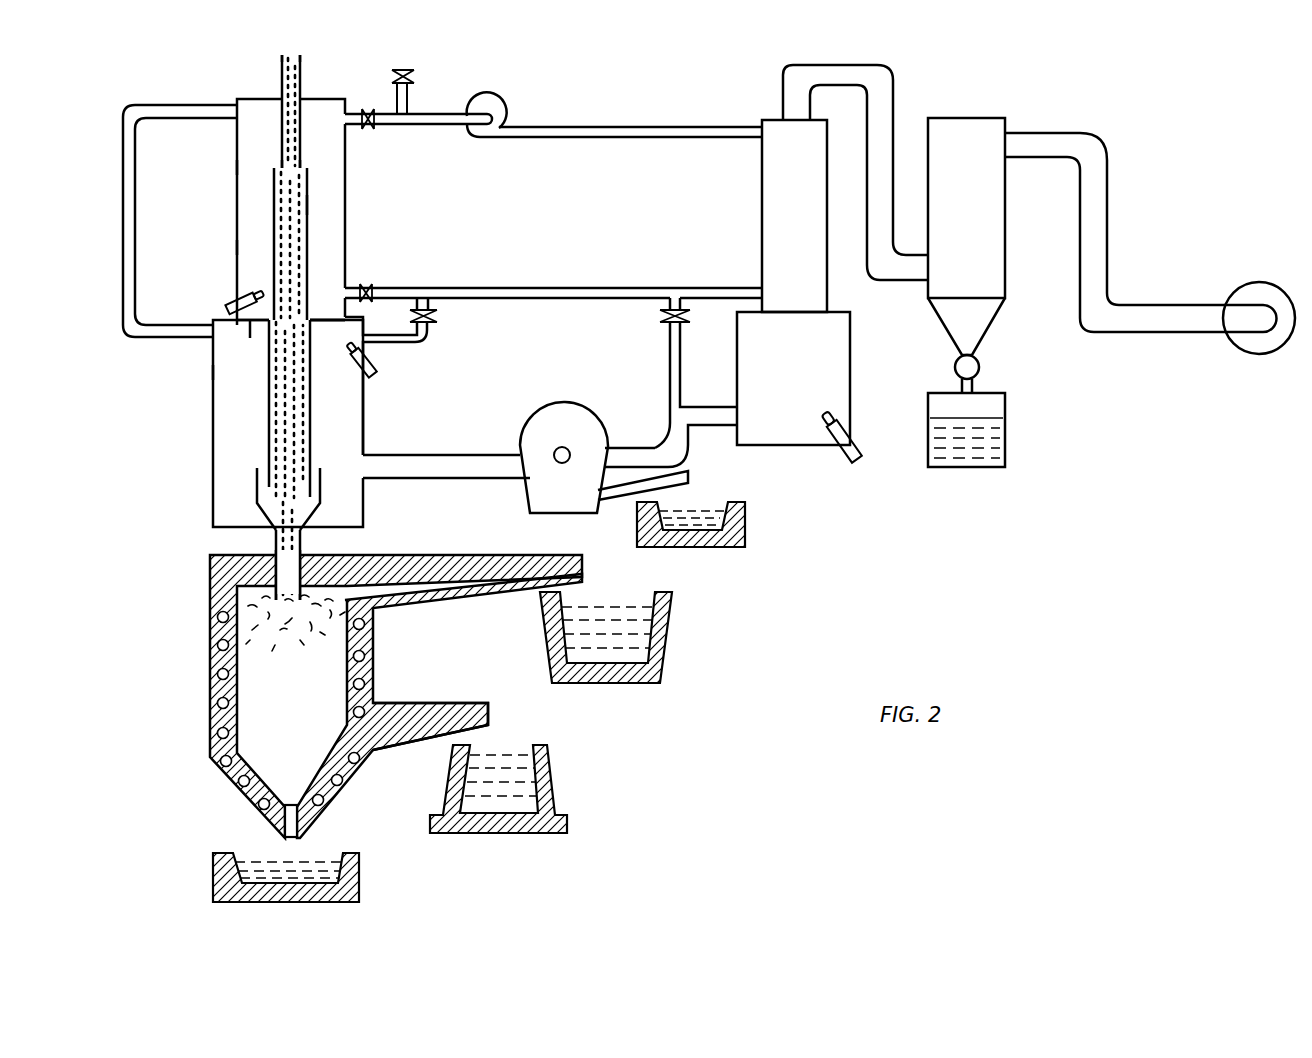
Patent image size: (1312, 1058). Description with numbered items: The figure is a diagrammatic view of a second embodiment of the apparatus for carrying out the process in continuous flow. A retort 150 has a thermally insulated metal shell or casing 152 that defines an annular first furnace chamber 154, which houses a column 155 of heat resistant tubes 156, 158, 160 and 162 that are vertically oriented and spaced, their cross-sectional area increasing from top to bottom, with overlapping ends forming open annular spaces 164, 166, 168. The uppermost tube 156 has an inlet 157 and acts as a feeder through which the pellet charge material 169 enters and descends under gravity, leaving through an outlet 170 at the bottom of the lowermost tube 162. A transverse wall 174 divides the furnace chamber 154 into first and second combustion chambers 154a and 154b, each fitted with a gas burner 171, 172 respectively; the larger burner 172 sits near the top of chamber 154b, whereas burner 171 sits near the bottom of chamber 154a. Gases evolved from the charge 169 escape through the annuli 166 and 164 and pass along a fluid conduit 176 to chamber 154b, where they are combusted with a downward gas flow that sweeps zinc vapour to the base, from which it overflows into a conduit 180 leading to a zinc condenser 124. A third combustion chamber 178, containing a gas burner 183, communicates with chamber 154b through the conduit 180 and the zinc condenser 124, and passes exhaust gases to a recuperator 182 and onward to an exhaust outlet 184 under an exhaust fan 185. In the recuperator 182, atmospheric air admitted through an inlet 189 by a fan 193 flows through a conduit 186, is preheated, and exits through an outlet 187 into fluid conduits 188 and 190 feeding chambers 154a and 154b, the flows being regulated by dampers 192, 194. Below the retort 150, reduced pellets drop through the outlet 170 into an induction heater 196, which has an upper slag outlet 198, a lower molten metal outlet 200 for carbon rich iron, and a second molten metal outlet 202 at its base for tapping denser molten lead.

The zinc condenser 124 is at (573, 426).
The retort 150 is at (257, 212).
The thermally insulated metal shell or casing 152 is at (235, 204).
The annular first furnace chamber 154 is at (255, 167).
The first combustion chamber 154a is at (256, 248).
The second combustion chamber 154b is at (242, 371).
The column of heat resistant tubes 155 is at (312, 205).
The uppermost tube 156 is at (274, 83).
The inlet 157 is at (300, 52).
The heat resistant tube 158 is at (305, 249).
The heat resistant tube 160 is at (268, 399).
The lowermost tube 162 is at (257, 492).
The open annular space 164 is at (303, 168).
The open annular space 166 is at (327, 317).
The open annular space 168 is at (262, 467).
The pellet charge material 169 is at (276, 63).
The outlet 170 is at (272, 575).
The gas burner 171 is at (226, 308).
The gas burner 172 is at (378, 380).
The transverse wall 174 is at (255, 423).
The fluid conduit 176 is at (137, 178).
The third combustion chamber 178 is at (808, 372).
The conduit 180 is at (452, 467).
The recuperator 182 is at (792, 163).
The gas burner 183 is at (848, 450).
The exhaust outlet 184 is at (792, 115).
The exhaust fan 185 is at (1254, 340).
The conduit 186 is at (558, 137).
The outlet 187 is at (530, 287).
The fluid conduit 188 is at (400, 287).
The inlet 189 is at (418, 74).
The fluid conduit 190 is at (420, 347).
The damper 192 is at (365, 285).
The fan 193 is at (510, 110).
The damper 194 is at (437, 316).
The induction heater 196 is at (218, 622).
The slag outlet 198 is at (503, 572).
The molten metal outlet 200 is at (453, 712).
The second molten metal outlet 202 is at (283, 818).